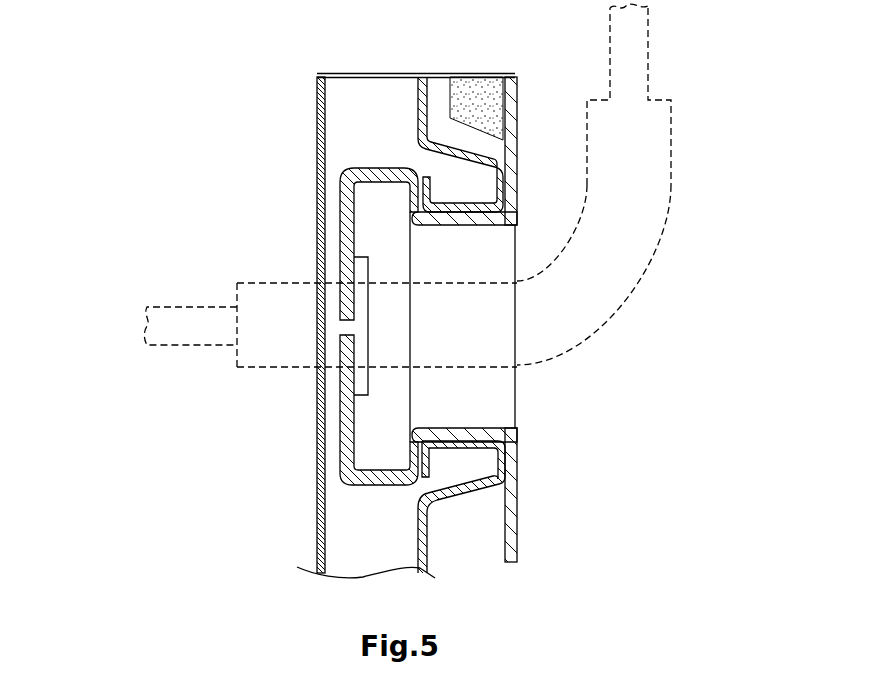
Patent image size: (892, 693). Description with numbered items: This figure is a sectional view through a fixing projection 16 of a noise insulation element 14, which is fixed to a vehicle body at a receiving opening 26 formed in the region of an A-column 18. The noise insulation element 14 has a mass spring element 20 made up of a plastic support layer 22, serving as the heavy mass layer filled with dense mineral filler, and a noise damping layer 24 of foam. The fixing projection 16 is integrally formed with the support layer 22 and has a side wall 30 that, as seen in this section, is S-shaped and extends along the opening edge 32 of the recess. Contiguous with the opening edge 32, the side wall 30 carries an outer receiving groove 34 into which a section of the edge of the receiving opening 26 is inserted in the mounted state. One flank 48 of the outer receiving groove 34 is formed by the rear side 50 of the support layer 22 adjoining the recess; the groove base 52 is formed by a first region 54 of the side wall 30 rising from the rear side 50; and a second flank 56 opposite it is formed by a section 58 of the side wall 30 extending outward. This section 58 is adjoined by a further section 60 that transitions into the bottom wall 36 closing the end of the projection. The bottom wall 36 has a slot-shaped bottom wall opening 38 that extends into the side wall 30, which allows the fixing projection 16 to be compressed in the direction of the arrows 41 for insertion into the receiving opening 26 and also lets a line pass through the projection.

The noise insulation element 14 is at (525, 475).
The fixing projection 16 is at (478, 230).
The A-column 18 is at (347, 110).
The mass spring element 20 is at (533, 143).
The plastic support layer 22 is at (512, 118).
The noise damping layer 24 is at (478, 77).
The receiving opening 26 is at (520, 307).
The side wall 30 is at (455, 425).
The opening edge 32 is at (526, 430).
The outer receiving groove 34 is at (468, 203).
The bottom wall 36 is at (347, 220).
The bottom wall opening 38 is at (345, 327).
The arrows 41 is at (382, 90).
The flank 48 is at (517, 462).
The rear side 50 is at (503, 106).
The groove base 52 is at (493, 492).
The first region 54 is at (487, 432).
The second flank 56 is at (470, 450).
The section 58 is at (435, 455).
The further section 60 is at (373, 478).